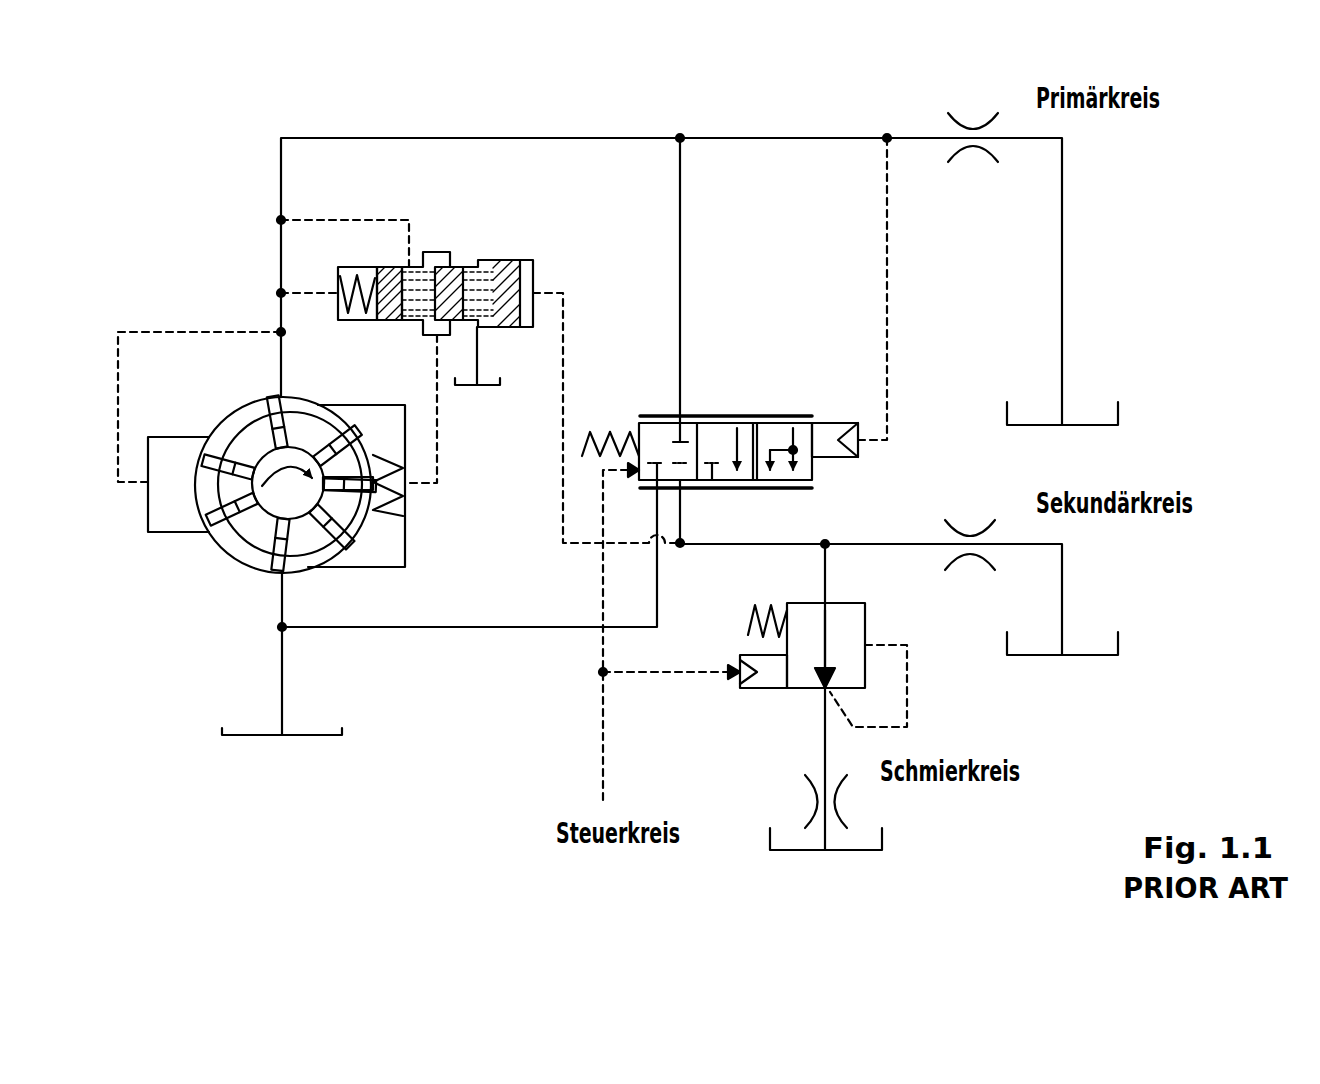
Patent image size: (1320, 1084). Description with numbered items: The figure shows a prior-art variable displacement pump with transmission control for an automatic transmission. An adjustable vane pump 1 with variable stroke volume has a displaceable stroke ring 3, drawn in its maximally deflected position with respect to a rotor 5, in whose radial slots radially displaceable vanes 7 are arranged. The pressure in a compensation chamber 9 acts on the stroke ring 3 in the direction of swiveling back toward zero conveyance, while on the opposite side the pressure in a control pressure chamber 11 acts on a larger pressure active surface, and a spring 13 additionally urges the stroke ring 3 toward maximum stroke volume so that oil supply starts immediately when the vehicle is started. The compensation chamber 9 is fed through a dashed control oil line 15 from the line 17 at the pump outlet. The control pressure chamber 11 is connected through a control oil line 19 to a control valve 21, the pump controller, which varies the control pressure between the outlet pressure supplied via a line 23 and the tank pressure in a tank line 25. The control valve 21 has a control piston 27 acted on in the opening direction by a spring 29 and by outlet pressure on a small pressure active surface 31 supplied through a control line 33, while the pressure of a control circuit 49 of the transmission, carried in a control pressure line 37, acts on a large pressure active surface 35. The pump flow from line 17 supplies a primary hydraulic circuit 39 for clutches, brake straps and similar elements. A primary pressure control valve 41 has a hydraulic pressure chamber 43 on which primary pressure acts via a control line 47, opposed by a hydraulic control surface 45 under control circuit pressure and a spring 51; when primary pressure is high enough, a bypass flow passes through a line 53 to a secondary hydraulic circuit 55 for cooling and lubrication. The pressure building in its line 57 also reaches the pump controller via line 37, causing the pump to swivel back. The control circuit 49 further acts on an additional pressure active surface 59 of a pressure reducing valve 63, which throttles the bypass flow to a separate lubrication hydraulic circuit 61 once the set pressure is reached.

The vane pump 1 is at (276, 486).
The stroke ring 3 is at (212, 580).
The rotor 5 is at (258, 530).
The vanes 7 is at (218, 520).
The compensation chamber 9 is at (170, 460).
The control pressure chamber 11 is at (370, 566).
The spring 13 is at (395, 406).
The control oil line 15 is at (160, 332).
The line at the pump outlet 17 is at (281, 372).
The control oil line 19 is at (437, 447).
The control valve 21 is at (445, 242).
The line 23 is at (305, 218).
The tank line 25 is at (477, 358).
The control piston 27 is at (468, 285).
The spring 29 is at (376, 268).
The small pressure active surface 31 is at (342, 268).
The control line 33 is at (310, 298).
The large pressure active surface 35 is at (520, 285).
The control pressure line 37 is at (563, 330).
The primary hydraulic circuit 39 is at (975, 130).
The primary pressure control valve 41 is at (748, 415).
The hydraulic pressure chamber 43 is at (825, 424).
The hydraulic control surface 45 is at (637, 424).
The control line 47 is at (887, 327).
The control circuit 49 is at (605, 790).
The spring 51 is at (608, 424).
The line 53 is at (680, 330).
The secondary hydraulic circuit 55 is at (970, 540).
The line 57 is at (900, 540).
The additional pressure active surface 59 is at (735, 668).
The lubrication hydraulic circuit 61 is at (835, 800).
The pressure reducing valve 63 is at (803, 706).